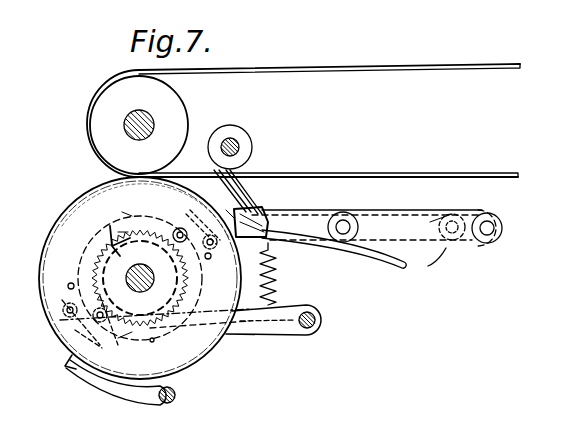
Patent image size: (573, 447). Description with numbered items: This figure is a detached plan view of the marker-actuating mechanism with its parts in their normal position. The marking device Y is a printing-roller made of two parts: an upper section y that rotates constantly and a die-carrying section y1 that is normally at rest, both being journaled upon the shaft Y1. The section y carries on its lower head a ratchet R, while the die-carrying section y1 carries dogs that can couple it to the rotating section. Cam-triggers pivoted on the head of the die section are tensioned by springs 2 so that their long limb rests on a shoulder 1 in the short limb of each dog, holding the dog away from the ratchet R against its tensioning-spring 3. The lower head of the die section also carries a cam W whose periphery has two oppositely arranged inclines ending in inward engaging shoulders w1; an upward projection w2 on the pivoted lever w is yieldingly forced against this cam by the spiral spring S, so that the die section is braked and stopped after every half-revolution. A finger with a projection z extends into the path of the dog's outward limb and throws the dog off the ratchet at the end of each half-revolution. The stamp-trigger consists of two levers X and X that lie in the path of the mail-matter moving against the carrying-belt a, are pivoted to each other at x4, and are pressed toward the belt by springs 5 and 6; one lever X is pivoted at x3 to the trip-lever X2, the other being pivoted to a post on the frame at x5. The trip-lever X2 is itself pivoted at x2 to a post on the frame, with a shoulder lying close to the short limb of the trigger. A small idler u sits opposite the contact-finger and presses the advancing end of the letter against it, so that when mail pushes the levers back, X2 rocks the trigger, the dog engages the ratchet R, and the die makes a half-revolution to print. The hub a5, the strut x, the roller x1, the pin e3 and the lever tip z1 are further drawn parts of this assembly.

The carrying-belt a is at (392, 65).
The drum pulley a5 is at (139, 125).
The idler u is at (243, 150).
The strut bars x is at (246, 208).
The lever X is at (258, 212).
The roller x1 is at (162, 226).
The pivot x2 is at (494, 228).
The pivot x3 is at (343, 212).
The pivot x4 is at (456, 241).
The pivot x5 is at (228, 212).
The trip-lever X2 is at (430, 223).
The shoulder 1 is at (186, 222).
The spring 2 is at (69, 289).
The tensioning-spring 3 is at (152, 342).
The spring 5 is at (354, 256).
The spring 6 is at (436, 263).
The pin e3 is at (127, 214).
The ratchet R is at (172, 305).
The spiral spring S is at (276, 292).
The pivoted lever w is at (250, 323).
The cam W is at (111, 240).
The engaging shoulder w1 is at (121, 227).
The upward projection w2 is at (120, 338).
The marking device Y is at (58, 279).
The shaft Y1 is at (134, 270).
The constantly-rotating section y is at (60, 226).
The die-carrying section y1 is at (55, 309).
The projection z is at (126, 399).
The lever tip z1 is at (65, 360).